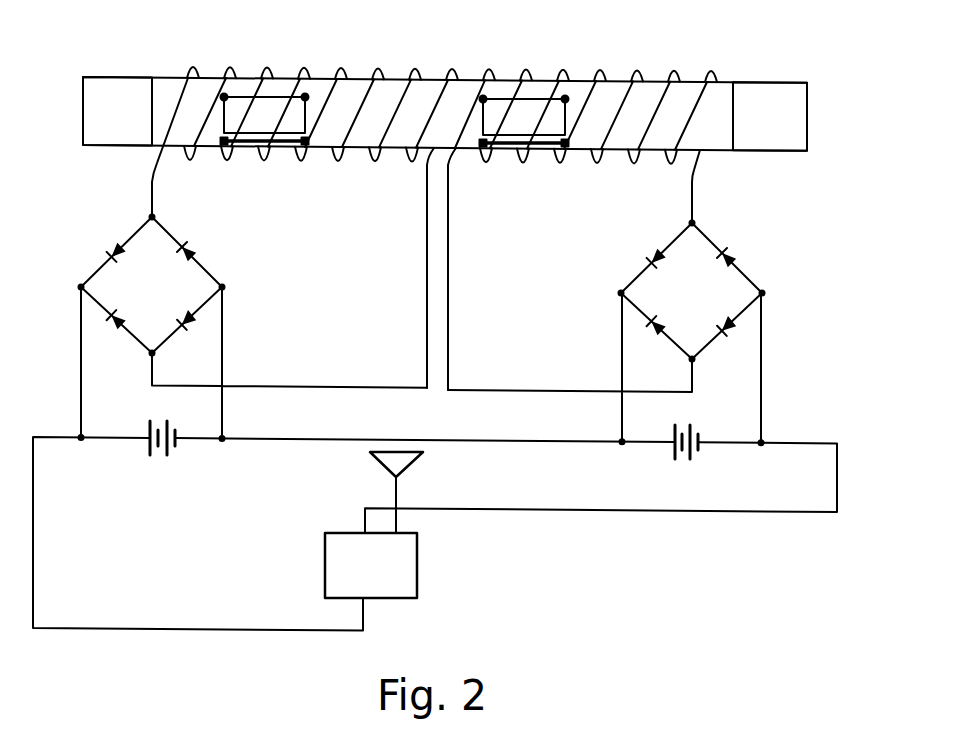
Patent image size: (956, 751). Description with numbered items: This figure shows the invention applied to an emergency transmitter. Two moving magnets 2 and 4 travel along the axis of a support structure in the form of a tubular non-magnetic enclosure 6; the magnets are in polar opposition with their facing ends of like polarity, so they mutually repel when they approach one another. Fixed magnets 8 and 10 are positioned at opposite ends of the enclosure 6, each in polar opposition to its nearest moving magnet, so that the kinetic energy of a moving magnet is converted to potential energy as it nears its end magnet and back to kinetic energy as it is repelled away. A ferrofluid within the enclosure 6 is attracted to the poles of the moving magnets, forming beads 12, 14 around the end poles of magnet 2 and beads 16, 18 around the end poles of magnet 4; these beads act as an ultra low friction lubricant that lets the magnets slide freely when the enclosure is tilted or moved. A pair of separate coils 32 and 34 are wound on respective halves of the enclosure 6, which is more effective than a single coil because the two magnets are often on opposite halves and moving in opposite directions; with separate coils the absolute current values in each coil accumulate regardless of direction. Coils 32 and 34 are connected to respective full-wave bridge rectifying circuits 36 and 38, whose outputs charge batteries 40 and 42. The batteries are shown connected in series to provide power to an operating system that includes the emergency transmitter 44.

The moving magnet 2 is at (276, 90).
The moving magnet 4 is at (540, 94).
The tubular non-magnetic enclosure 6 is at (430, 76).
The fixed magnet 8 is at (120, 80).
The fixed magnet 10 is at (768, 85).
The ferrofluid bead 12 is at (224, 94).
The ferrofluid bead 14 is at (305, 94).
The ferrofluid bead 16 is at (485, 96).
The ferrofluid bead 18 is at (567, 97).
The coil 32 is at (370, 78).
The coil 34 is at (707, 72).
The full-wave bridge rectifying circuit 36 is at (170, 298).
The full-wave bridge rectifying circuit 38 is at (673, 302).
The battery 40 is at (141, 420).
The battery 42 is at (698, 419).
The emergency transmitter 44 is at (417, 574).